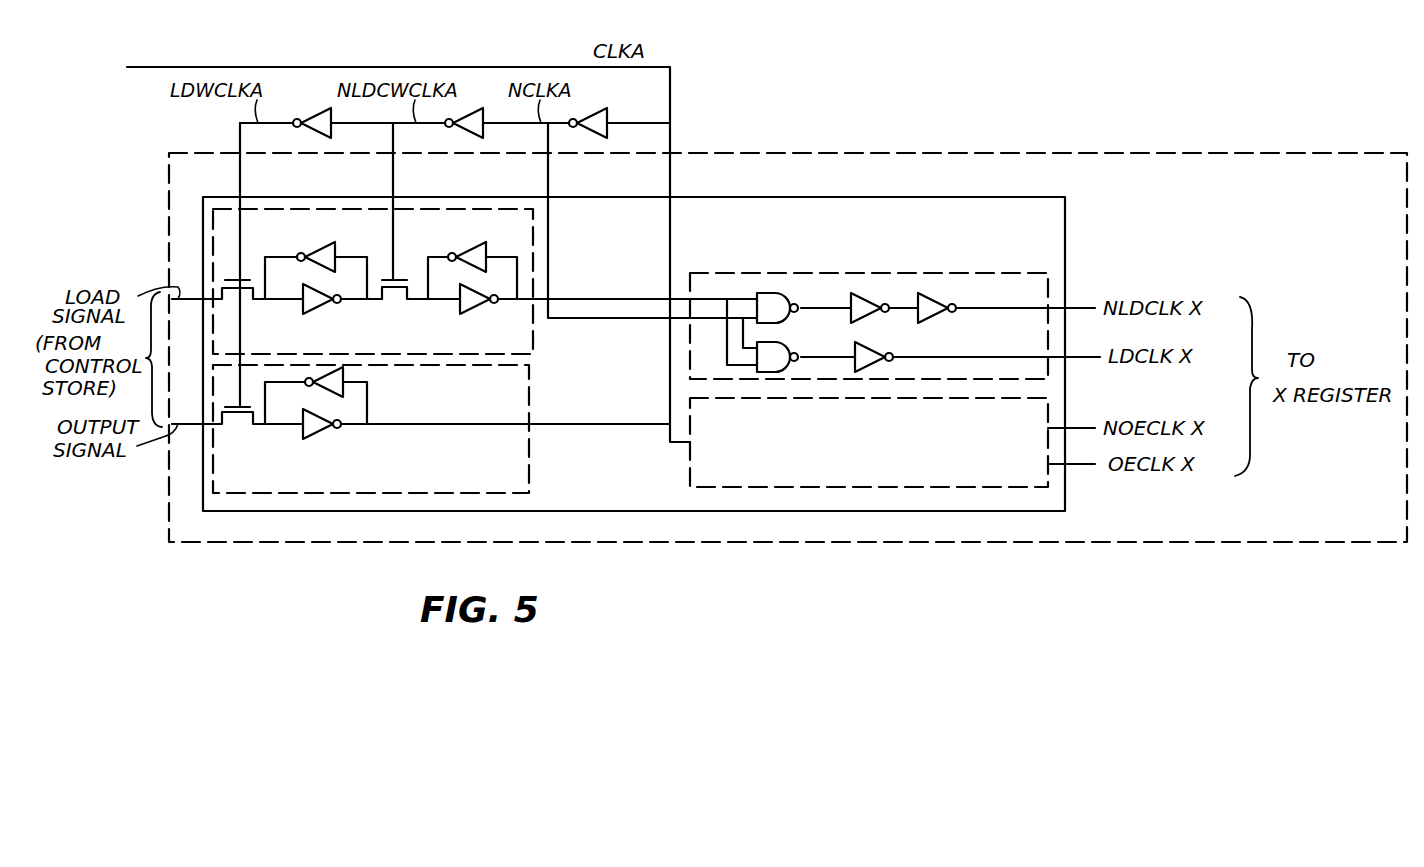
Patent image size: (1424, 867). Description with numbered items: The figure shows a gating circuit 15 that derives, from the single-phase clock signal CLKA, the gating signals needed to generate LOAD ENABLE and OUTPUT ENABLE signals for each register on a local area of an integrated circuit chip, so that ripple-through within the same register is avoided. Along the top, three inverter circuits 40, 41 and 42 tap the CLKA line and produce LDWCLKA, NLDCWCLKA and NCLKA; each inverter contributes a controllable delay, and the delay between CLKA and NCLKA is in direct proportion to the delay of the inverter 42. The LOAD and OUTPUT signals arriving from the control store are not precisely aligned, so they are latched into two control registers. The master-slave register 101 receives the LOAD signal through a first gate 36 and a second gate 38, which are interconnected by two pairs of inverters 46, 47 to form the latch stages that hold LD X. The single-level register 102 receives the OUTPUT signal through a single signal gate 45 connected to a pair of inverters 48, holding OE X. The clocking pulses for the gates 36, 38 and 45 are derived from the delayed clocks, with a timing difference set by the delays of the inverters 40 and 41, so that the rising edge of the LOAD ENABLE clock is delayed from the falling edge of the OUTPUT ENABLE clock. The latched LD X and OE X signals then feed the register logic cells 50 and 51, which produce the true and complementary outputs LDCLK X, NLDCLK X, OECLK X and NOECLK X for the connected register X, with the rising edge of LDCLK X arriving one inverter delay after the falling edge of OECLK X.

The gating circuit 15 is at (623, 543).
The gate 36 is at (245, 303).
The gate 38 is at (395, 303).
The inverter circuit 40 is at (317, 106).
The inverter circuit 41 is at (483, 106).
The inverter circuit 42 is at (610, 110).
The signal gate 45 is at (237, 428).
The inverter pair 46 is at (316, 261).
The inverter pair 47 is at (471, 261).
The inverter pair 48 is at (316, 395).
The register logic cell 50 is at (777, 272).
The register logic cell 51 is at (872, 453).
The master-slave register 101 is at (420, 209).
The single-level register 102 is at (529, 458).